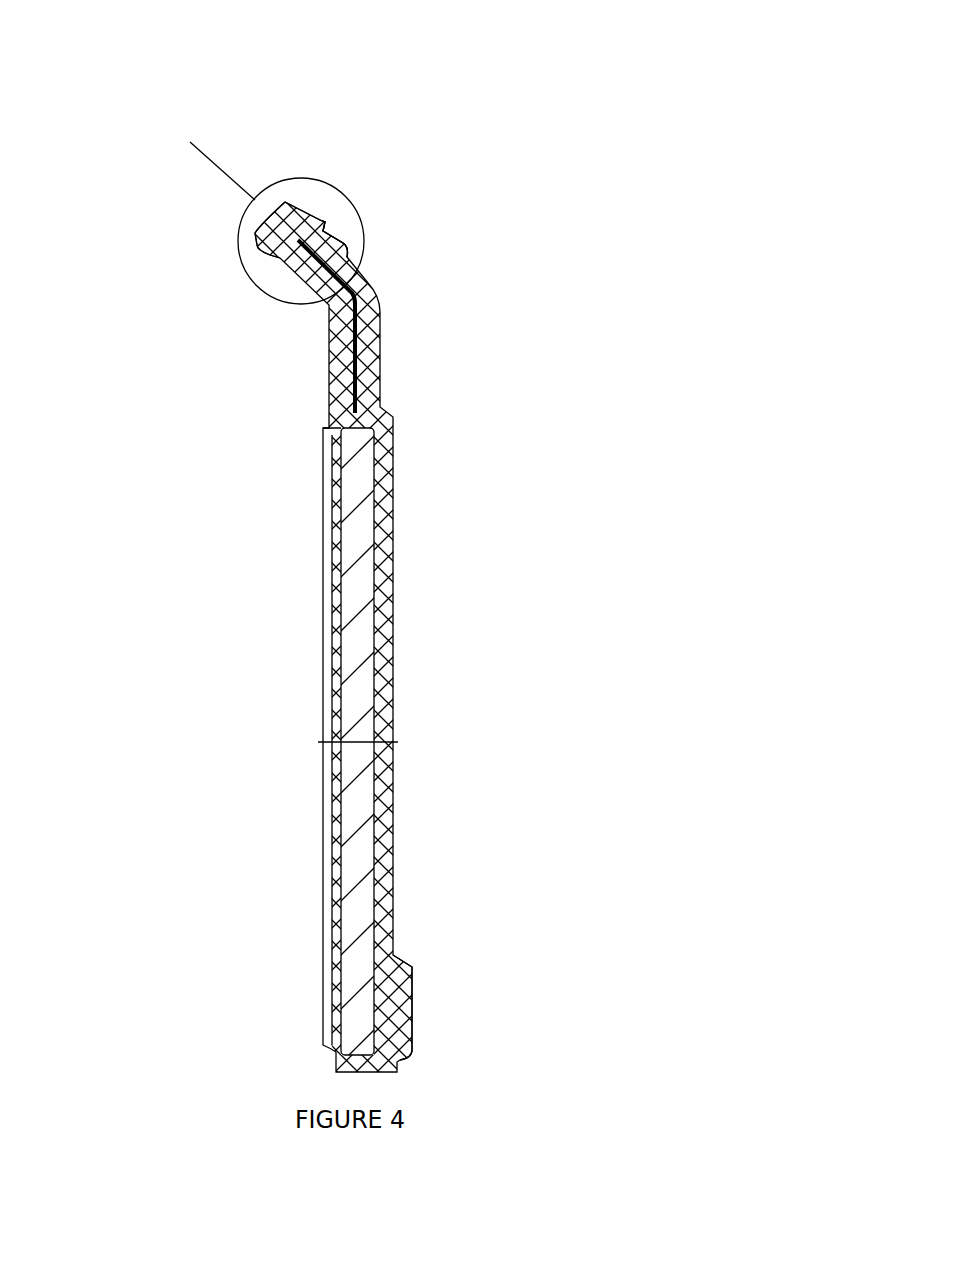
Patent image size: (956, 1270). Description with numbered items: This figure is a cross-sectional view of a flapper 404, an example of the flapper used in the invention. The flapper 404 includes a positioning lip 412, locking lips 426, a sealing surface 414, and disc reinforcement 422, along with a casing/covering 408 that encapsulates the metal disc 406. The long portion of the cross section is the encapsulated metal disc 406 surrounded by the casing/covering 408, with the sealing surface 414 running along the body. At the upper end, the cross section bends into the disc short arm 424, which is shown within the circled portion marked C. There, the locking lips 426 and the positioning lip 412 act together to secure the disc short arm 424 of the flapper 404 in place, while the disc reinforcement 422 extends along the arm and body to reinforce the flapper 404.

The flapper 404 is at (604, 121).
The metal disc 406 is at (362, 615).
The casing/covering 408 is at (402, 965).
The positioning lip 412 is at (257, 252).
The sealing surface 414 is at (323, 460).
The disc reinforcement 422 is at (380, 338).
The disc short arm 424 is at (303, 278).
The locking lips 426 is at (362, 242).